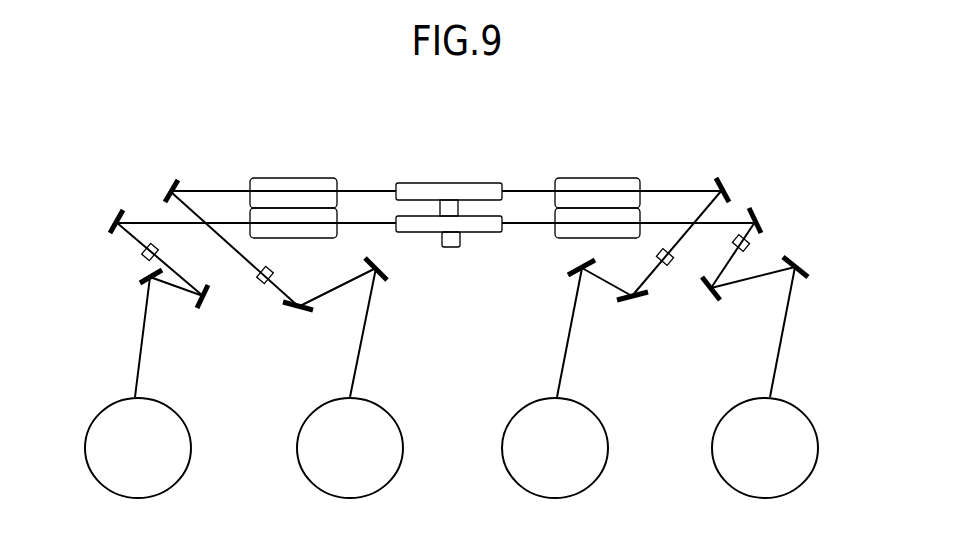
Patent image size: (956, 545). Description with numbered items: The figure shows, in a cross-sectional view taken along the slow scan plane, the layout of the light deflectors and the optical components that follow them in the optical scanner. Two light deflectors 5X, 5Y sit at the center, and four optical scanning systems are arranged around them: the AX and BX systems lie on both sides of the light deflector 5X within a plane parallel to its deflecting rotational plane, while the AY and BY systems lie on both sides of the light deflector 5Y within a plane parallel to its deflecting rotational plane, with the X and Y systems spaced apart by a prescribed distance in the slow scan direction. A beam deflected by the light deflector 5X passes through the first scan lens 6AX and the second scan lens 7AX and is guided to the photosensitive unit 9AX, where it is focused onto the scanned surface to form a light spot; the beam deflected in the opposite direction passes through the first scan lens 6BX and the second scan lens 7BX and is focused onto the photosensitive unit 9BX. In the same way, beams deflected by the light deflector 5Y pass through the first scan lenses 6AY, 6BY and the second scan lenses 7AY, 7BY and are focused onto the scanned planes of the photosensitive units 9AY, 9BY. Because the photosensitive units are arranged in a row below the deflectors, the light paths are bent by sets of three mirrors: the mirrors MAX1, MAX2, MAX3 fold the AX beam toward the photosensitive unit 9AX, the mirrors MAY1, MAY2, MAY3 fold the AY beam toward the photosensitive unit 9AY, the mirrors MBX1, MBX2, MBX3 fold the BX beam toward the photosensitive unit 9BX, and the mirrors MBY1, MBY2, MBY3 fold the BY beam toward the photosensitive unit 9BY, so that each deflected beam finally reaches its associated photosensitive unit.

The mirror MBX1 is at (175, 181).
The mirror MBY1 is at (120, 210).
The mirror MAX1 is at (762, 150).
The mirror MAY1 is at (797, 184).
The mirror MBY2 is at (200, 308).
The mirror MBY3 is at (147, 276).
The mirror MBX2 is at (306, 311).
The mirror MBX3 is at (382, 281).
The mirror MAX2 is at (626, 303).
The mirror MAX3 is at (566, 270).
The mirror MAY2 is at (717, 301).
The mirror MAY3 is at (803, 278).
The second scan lens 7BY is at (141, 252).
The second scan lens 7BX is at (258, 281).
The second scan lens 7AX is at (670, 265).
The second scan lens 7AY is at (752, 246).
The first scan lens 6BX is at (300, 178).
The first scan lens 6BY is at (268, 238).
The first scan lens 6AX is at (585, 178).
The first scan lens 6AY is at (553, 237).
The light deflector 5X is at (458, 183).
The light deflector 5Y is at (403, 232).
The photosensitive unit 9BY is at (184, 474).
The photosensitive unit 9BX is at (396, 474).
The photosensitive unit 9AX is at (601, 474).
The photosensitive unit 9AY is at (812, 474).